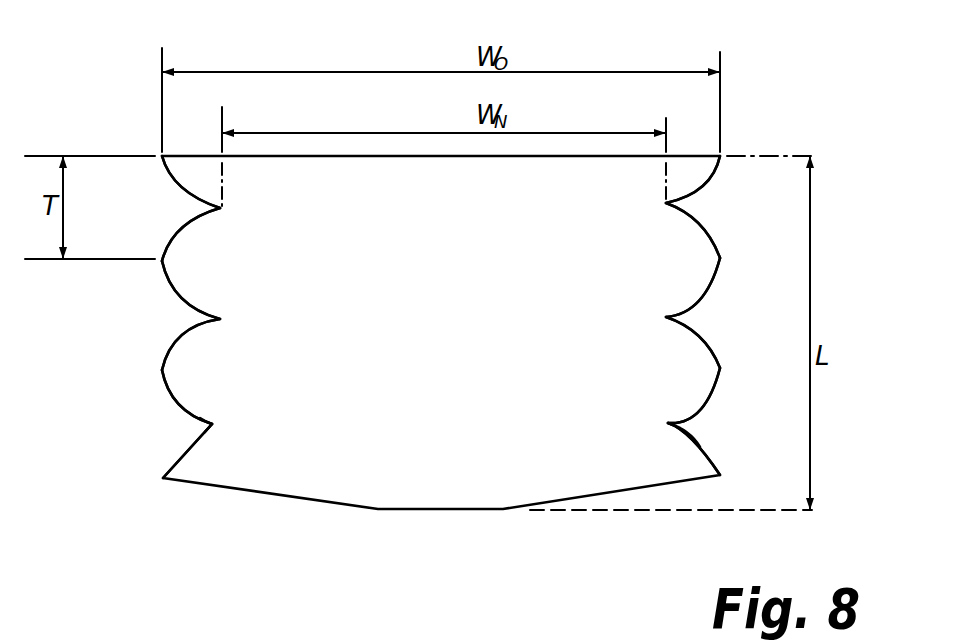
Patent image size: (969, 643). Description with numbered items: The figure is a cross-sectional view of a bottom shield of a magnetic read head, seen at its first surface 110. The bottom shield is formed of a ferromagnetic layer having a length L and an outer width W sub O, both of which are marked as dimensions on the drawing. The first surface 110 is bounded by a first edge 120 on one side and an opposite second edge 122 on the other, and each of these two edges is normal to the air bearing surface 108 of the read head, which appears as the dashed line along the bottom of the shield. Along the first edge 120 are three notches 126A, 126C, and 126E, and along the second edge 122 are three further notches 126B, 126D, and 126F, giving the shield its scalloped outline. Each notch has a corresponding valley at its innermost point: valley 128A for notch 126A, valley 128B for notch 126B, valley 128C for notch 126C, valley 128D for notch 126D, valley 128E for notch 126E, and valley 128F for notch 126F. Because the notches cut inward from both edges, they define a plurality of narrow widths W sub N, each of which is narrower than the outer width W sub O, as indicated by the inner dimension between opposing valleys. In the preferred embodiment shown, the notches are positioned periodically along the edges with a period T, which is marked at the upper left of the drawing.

The air bearing surface 108 is at (638, 511).
The first surface 110 is at (746, 126).
The first edge 120 is at (201, 438).
The second edge 122 is at (695, 444).
The notch 126A is at (200, 207).
The notch 126B is at (685, 204).
The notch 126C is at (200, 318).
The notch 126D is at (686, 318).
The notch 126E is at (191, 423).
The notch 126F is at (686, 424).
The valley 128A is at (224, 210).
The valley 128B is at (665, 203).
The valley 128C is at (227, 322).
The valley 128D is at (665, 318).
The valley 128E is at (213, 424).
The valley 128F is at (667, 423).